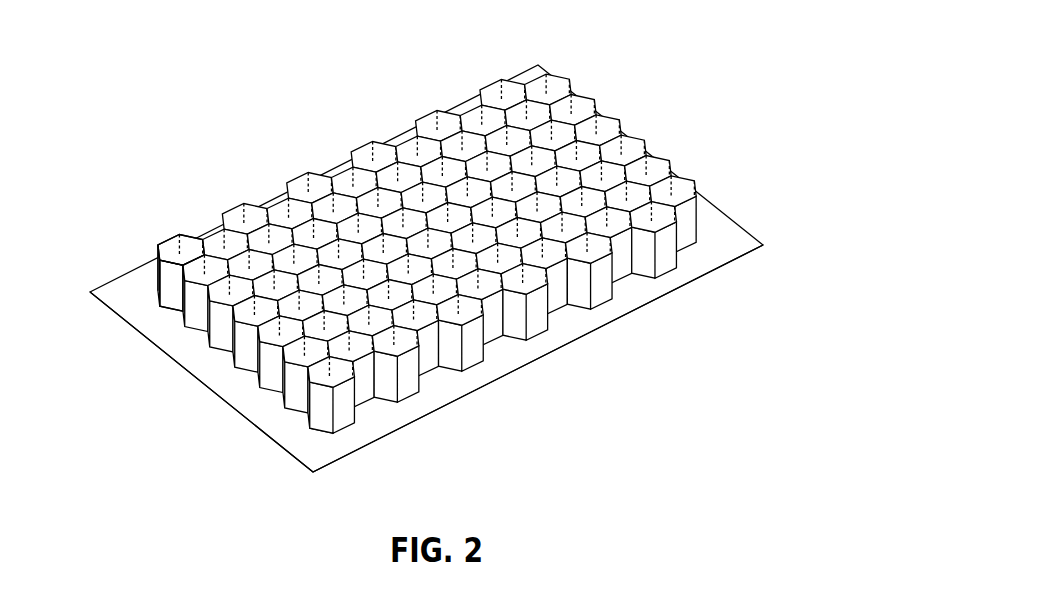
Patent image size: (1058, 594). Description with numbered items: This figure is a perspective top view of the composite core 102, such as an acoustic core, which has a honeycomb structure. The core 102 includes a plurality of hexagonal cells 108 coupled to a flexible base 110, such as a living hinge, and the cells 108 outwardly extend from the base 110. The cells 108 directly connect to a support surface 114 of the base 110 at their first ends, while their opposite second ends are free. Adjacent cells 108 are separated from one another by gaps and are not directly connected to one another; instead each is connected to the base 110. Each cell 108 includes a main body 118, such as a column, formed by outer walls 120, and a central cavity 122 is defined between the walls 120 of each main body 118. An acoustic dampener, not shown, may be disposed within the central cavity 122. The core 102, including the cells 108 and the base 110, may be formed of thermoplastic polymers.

The composite core 102 is at (427, 244).
The cells 108 is at (668, 240).
The flexible base 110 is at (663, 295).
The support surface 114 is at (618, 297).
The main body 118 is at (153, 302).
The outer walls 120 is at (170, 302).
The central cavity 122 is at (195, 248).